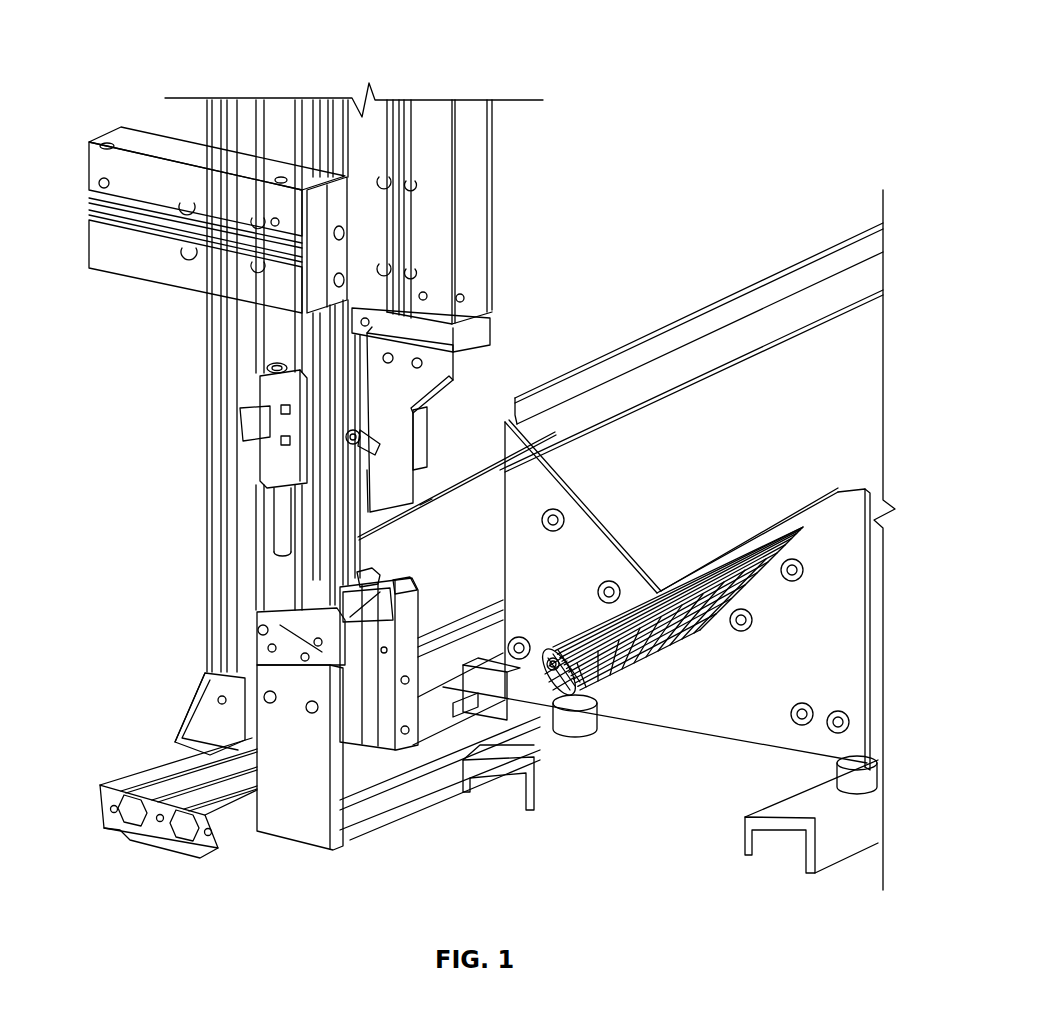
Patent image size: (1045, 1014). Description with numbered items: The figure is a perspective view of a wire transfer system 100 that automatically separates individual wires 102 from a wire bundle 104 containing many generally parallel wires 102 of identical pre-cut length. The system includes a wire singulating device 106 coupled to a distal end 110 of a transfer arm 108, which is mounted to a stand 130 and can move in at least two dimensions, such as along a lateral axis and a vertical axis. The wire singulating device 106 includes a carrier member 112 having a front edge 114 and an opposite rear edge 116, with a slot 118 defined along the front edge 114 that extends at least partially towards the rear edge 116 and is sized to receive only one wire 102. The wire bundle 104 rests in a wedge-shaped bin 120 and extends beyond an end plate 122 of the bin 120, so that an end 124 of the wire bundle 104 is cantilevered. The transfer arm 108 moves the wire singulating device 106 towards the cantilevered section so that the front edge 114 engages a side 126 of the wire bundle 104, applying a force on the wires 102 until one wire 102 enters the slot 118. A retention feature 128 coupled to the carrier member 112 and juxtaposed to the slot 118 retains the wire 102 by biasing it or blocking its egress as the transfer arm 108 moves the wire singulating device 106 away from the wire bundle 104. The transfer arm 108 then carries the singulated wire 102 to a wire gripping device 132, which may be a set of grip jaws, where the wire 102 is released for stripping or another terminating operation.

The wire transfer system 100 is at (648, 58).
The wire 102 is at (625, 410).
The wire bundle 104 is at (730, 548).
The wire singulating device 106 is at (388, 440).
The transfer arm 108 is at (430, 239).
The distal end 110 is at (497, 341).
The carrier member 112 is at (388, 470).
The front edge 114 is at (425, 491).
The rear edge 116 is at (363, 482).
The slot 118 is at (434, 506).
The wedge-shaped bin 120 is at (663, 553).
The end plate 122 is at (720, 637).
The end of the wire bundle 124 is at (566, 682).
The side of the wire bundle 126 is at (560, 666).
The retention feature 128 is at (431, 508).
The stand 130 is at (240, 364).
The wire gripping device 132 is at (381, 588).